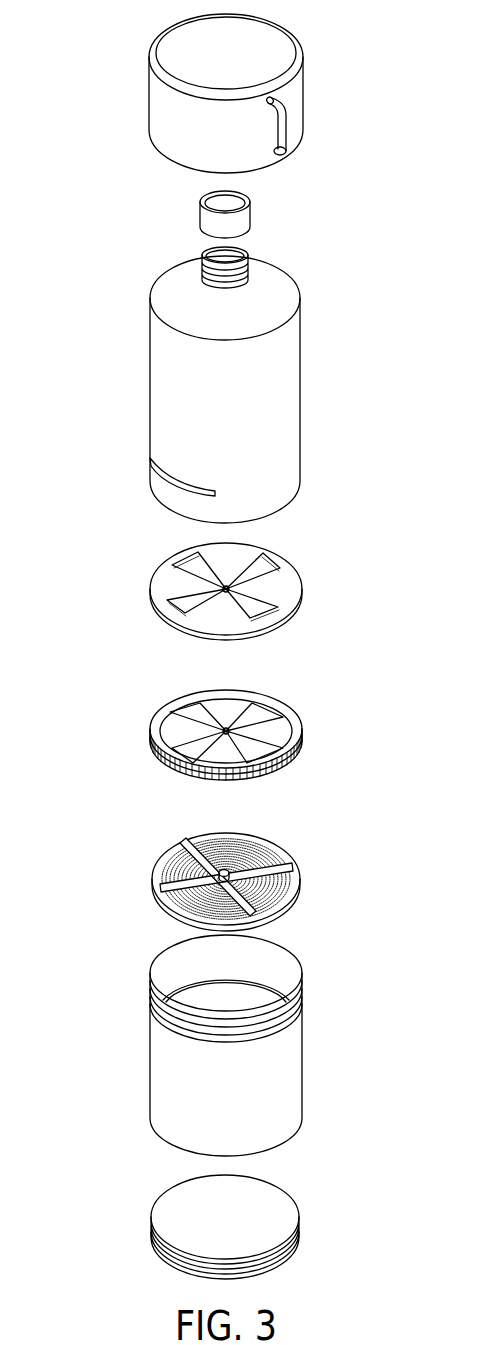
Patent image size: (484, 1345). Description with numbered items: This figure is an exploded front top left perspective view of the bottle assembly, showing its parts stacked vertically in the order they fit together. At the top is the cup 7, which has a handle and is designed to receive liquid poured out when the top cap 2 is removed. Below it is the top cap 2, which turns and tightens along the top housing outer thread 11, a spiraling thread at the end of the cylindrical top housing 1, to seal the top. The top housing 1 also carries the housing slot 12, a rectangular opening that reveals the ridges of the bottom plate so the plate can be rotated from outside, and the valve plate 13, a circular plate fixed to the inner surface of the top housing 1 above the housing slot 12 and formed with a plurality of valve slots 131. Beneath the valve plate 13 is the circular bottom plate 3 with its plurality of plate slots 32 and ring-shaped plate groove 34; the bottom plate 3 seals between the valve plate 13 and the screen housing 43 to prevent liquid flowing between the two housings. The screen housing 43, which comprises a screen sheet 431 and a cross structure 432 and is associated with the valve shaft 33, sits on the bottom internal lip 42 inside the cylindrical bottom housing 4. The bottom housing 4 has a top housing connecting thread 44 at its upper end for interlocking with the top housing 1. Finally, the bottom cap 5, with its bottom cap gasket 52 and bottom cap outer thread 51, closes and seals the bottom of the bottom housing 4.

The cup 7 is at (157, 103).
The top cap 2 is at (205, 215).
The top housing 1 is at (188, 385).
The top housing outer thread 11 is at (212, 283).
The housing slot 12 is at (183, 483).
The valve plate 13 is at (221, 585).
The valve slots 131 is at (270, 565).
The bottom plate 3 is at (212, 724).
The plate slots 32 is at (187, 705).
The plate groove 34 is at (297, 712).
The screen housing 43 is at (218, 865).
The valve shaft 33 is at (175, 838).
The screen sheet 431 is at (290, 893).
The cross structure 432 is at (278, 862).
The bottom housing 4 is at (240, 1045).
The bottom internal lip 42 is at (276, 992).
The top housing connecting thread 44 is at (300, 990).
The bottom cap 5 is at (219, 1218).
The bottom cap gasket 52 is at (298, 1228).
The bottom cap outer thread 51 is at (157, 1246).